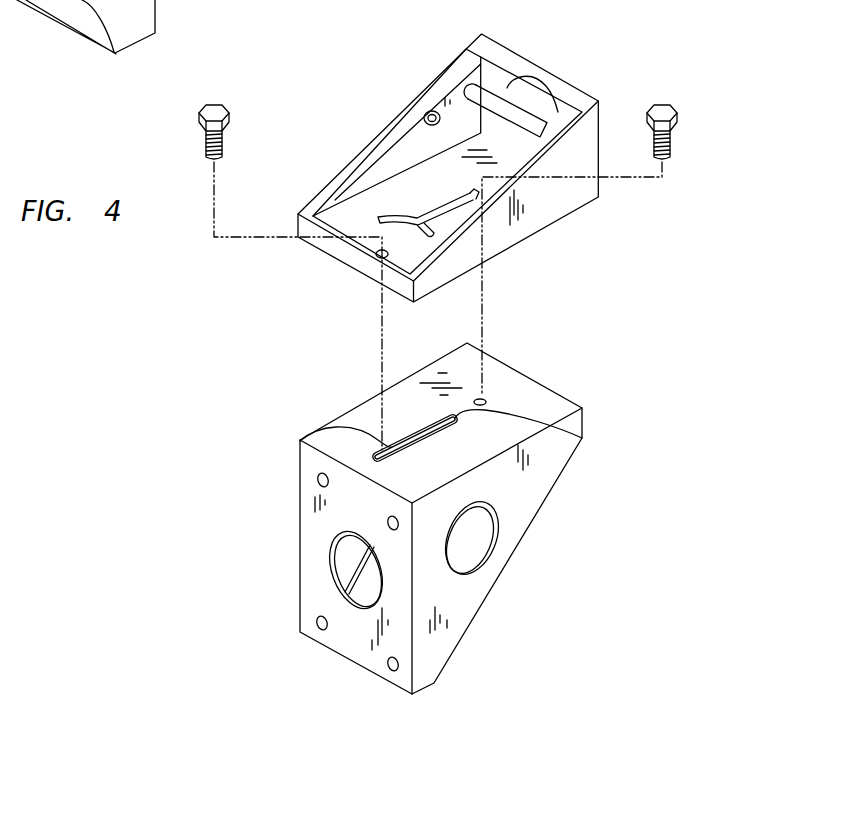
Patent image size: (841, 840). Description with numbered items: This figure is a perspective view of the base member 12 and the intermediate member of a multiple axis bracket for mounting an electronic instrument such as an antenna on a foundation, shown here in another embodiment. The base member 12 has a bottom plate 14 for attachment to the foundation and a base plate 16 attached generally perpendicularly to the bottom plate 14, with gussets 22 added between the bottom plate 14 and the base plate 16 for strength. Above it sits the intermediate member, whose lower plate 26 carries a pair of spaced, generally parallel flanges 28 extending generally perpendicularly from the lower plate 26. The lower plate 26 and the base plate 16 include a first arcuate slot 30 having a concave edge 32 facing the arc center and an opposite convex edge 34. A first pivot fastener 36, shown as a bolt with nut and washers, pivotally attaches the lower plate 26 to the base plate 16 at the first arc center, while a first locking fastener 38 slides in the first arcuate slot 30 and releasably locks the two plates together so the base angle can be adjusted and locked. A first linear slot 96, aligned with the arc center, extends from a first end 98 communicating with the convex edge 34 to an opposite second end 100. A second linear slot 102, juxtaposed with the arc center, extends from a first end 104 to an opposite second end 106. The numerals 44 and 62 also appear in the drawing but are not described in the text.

The base member 12 is at (446, 518).
The bottom plate 14 is at (314, 558).
The base plate 16 is at (553, 407).
The gussets 22 is at (437, 650).
The lower plate 26 is at (381, 213).
The flanges 28 is at (441, 159).
The first arcuate slot 30 is at (379, 221).
The concave edge 32 is at (428, 236).
The convex edge 34 is at (377, 215).
The first pivot fastener 36 is at (205, 142).
The first locking fastener 38 is at (672, 143).
The housing 44 is at (150, 18).
The blade 62 is at (55, 2).
The first linear slot 96 is at (438, 228).
The first end 98 is at (410, 213).
The second end 100 is at (450, 208).
The second linear slot 102 is at (330, 427).
The first end 104 is at (303, 460).
The second end 106 is at (577, 437).